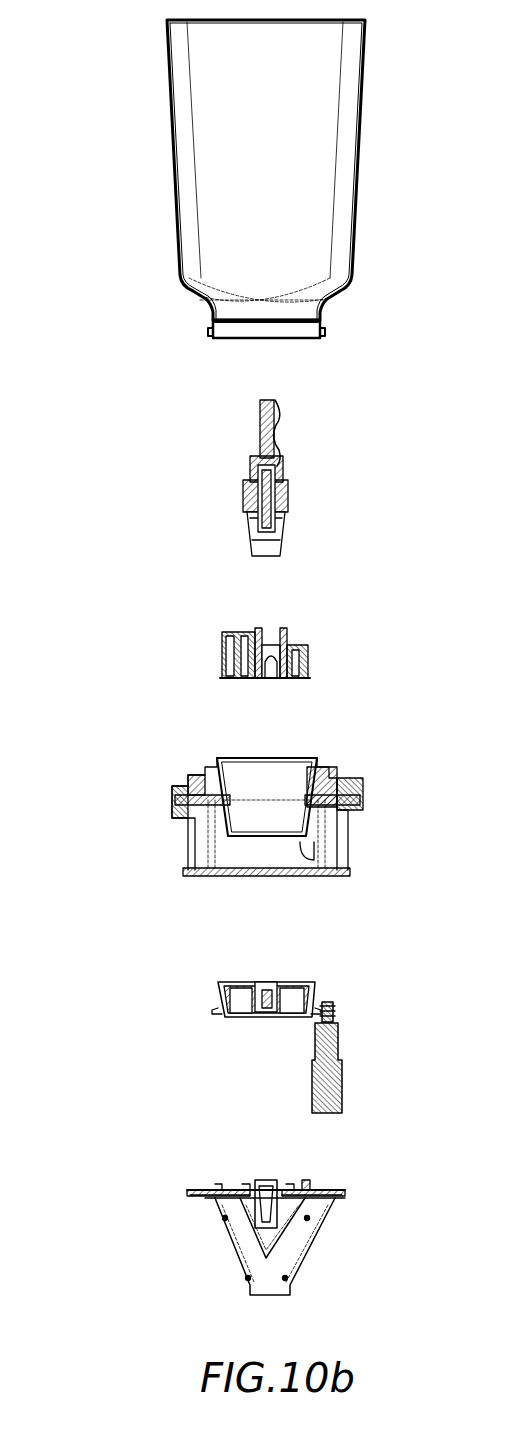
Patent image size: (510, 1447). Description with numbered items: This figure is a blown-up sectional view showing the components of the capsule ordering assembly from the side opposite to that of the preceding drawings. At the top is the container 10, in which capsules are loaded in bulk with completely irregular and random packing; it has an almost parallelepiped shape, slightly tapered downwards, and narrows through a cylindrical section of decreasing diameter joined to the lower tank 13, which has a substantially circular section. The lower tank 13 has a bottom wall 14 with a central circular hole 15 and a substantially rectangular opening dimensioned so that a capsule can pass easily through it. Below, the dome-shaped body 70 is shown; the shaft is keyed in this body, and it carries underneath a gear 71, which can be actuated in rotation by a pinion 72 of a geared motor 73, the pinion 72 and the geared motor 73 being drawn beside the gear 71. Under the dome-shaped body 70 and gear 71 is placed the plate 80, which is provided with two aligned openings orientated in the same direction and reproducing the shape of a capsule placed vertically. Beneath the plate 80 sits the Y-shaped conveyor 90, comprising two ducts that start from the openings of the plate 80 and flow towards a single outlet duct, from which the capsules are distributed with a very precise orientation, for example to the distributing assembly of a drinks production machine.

The container 10 is at (347, 162).
The lower tank 13 is at (305, 818).
The bottom wall 14 is at (281, 838).
The central circular hole 15 is at (250, 835).
The dome-shaped body 70 is at (215, 990).
The gear 71 is at (212, 1012).
The pinion 72 is at (330, 1005).
The geared motor 73 is at (340, 1088).
The plate 80 is at (198, 1190).
The Y-shaped conveyor 90 is at (240, 1252).